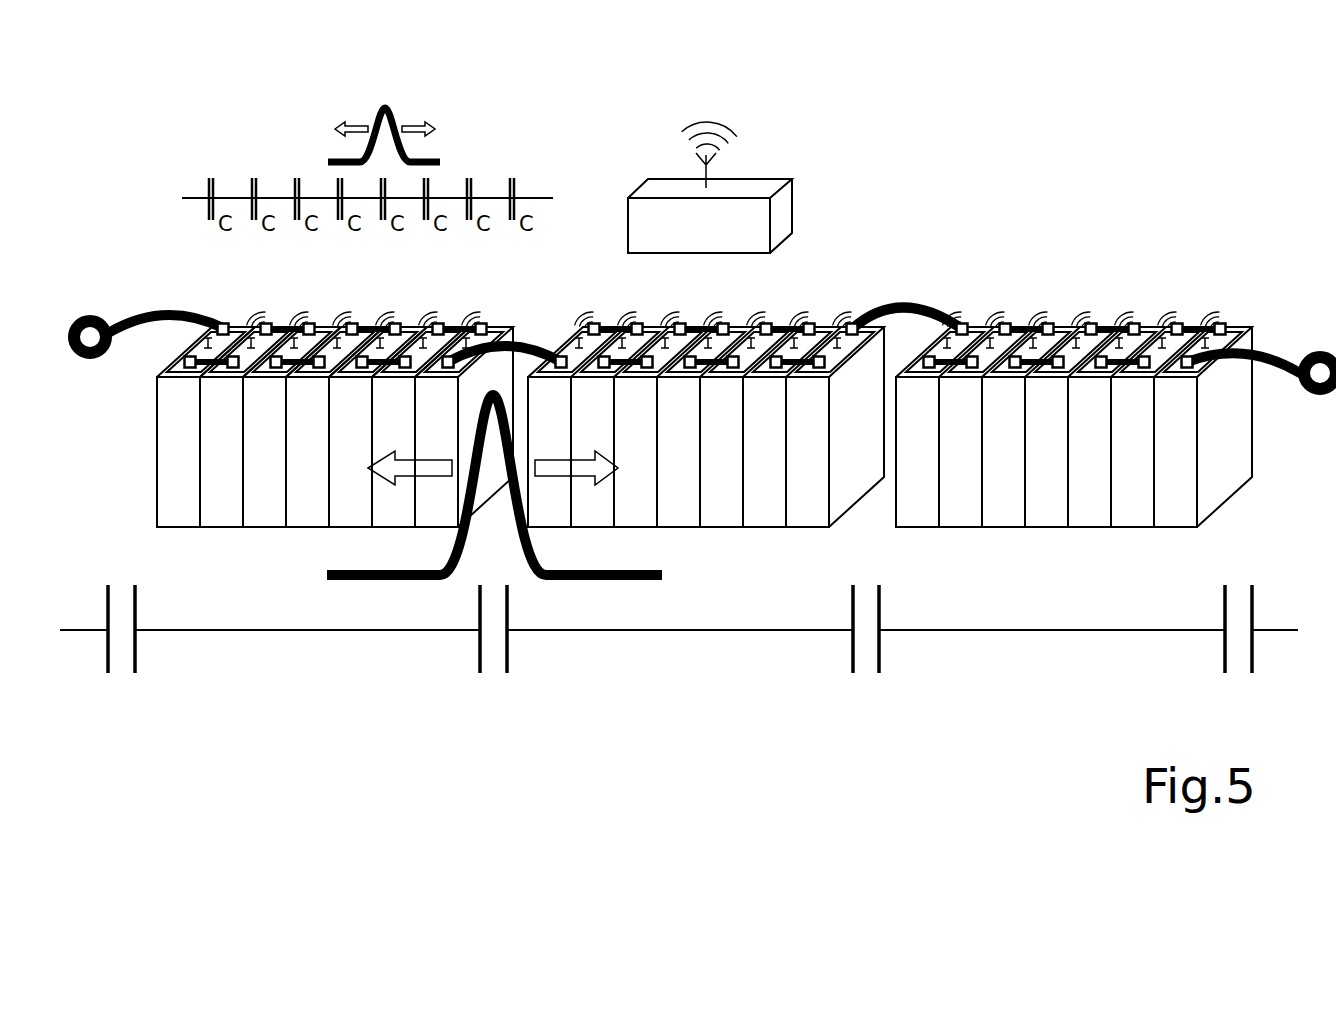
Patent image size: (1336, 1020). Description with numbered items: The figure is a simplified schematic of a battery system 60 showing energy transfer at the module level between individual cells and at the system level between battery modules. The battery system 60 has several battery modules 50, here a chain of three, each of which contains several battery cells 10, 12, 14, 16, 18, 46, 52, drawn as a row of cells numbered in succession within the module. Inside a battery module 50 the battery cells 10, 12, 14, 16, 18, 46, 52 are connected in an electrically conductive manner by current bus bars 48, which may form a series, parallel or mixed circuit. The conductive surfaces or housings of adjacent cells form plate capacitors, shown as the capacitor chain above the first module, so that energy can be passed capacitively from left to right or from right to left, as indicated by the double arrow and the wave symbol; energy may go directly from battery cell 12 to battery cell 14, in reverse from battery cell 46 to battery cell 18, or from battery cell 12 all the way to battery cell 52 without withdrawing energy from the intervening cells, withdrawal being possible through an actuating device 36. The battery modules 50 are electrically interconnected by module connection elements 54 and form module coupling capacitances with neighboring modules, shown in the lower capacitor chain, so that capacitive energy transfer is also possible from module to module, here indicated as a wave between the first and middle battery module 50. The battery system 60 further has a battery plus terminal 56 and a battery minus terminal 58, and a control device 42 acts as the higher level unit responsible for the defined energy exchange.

The battery cell 10 is at (163, 517).
The battery cell 12 is at (206, 517).
The battery cell 14 is at (249, 517).
The battery cell 16 is at (292, 517).
The battery cell 18 is at (335, 517).
The battery cell 46 is at (378, 517).
The battery cell 52 is at (510, 474).
The actuating device 36 is at (384, 322).
The control device 42 is at (783, 207).
The current bus bar 48 is at (292, 326).
The battery module 50 is at (679, 681).
The module connection element 54 is at (522, 340).
The battery plus terminal 56 is at (160, 308).
The battery minus terminal 58 is at (1268, 345).
The battery system 60 is at (1213, 250).